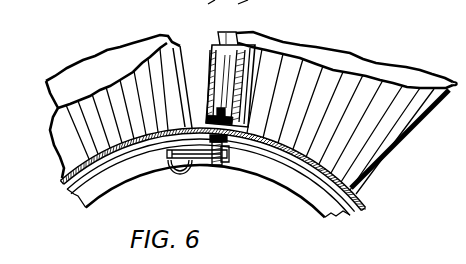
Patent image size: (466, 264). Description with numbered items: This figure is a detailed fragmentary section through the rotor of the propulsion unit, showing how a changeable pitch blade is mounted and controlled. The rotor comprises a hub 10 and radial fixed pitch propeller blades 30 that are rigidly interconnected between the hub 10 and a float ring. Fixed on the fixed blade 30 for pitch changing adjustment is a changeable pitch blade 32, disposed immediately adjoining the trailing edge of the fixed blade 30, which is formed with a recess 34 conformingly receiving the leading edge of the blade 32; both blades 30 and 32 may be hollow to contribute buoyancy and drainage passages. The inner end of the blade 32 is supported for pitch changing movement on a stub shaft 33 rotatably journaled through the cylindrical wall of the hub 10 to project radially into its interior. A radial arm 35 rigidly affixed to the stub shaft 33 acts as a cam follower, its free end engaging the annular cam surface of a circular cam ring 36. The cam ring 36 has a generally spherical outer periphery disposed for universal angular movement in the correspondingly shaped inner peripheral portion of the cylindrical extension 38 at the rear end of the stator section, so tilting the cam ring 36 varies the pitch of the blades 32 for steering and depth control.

The hub 10 is at (292, 138).
The fixed pitch propeller blade 30 is at (103, 63).
The changeable pitch blade 32 is at (211, 78).
The stub shaft 33 is at (215, 165).
The recess 34 is at (236, 42).
The radial arm 35 is at (167, 164).
The cam ring 36 is at (286, 186).
The cylindrical extension 38 is at (330, 200).